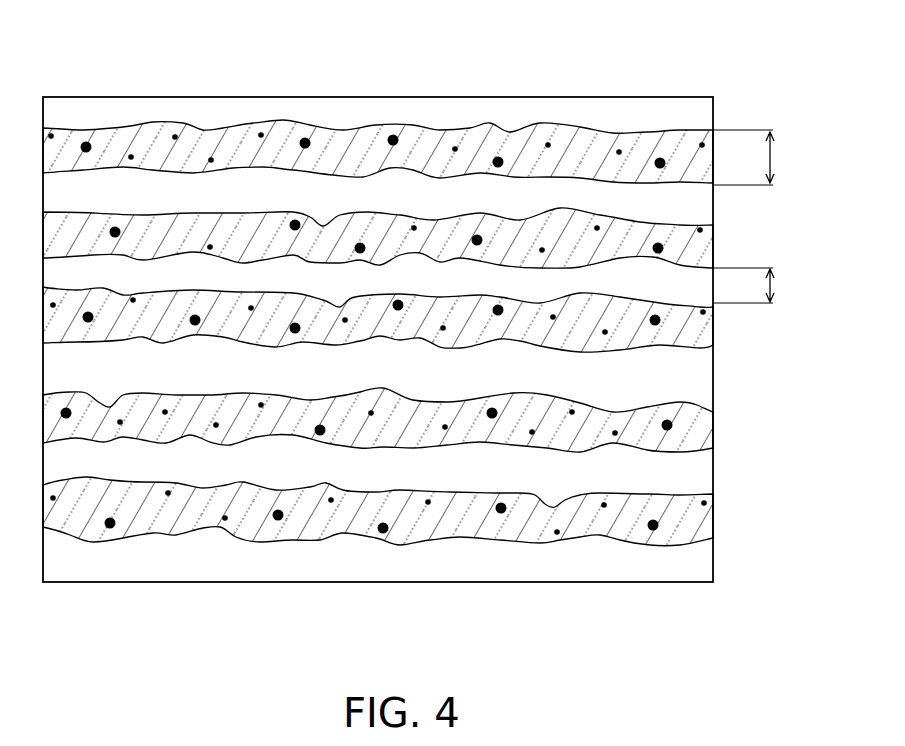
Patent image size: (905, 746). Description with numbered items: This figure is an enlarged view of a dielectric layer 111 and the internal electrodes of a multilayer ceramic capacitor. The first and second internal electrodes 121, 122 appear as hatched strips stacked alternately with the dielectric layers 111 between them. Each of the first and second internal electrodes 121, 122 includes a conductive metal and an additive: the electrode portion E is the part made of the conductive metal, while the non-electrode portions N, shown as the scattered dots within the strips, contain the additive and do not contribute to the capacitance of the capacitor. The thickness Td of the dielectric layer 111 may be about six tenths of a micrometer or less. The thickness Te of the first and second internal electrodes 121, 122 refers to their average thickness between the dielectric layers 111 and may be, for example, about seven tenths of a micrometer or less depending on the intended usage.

The dielectric layer 111 is at (698, 384).
The first internal electrode 121 is at (715, 331).
The second internal electrode 122 is at (715, 246).
The electrode portion E is at (566, 164).
The non-electrode portion N is at (113, 227).
The thickness of the internal electrodes Te is at (758, 157).
The thickness of the dielectric layer Td is at (760, 285).